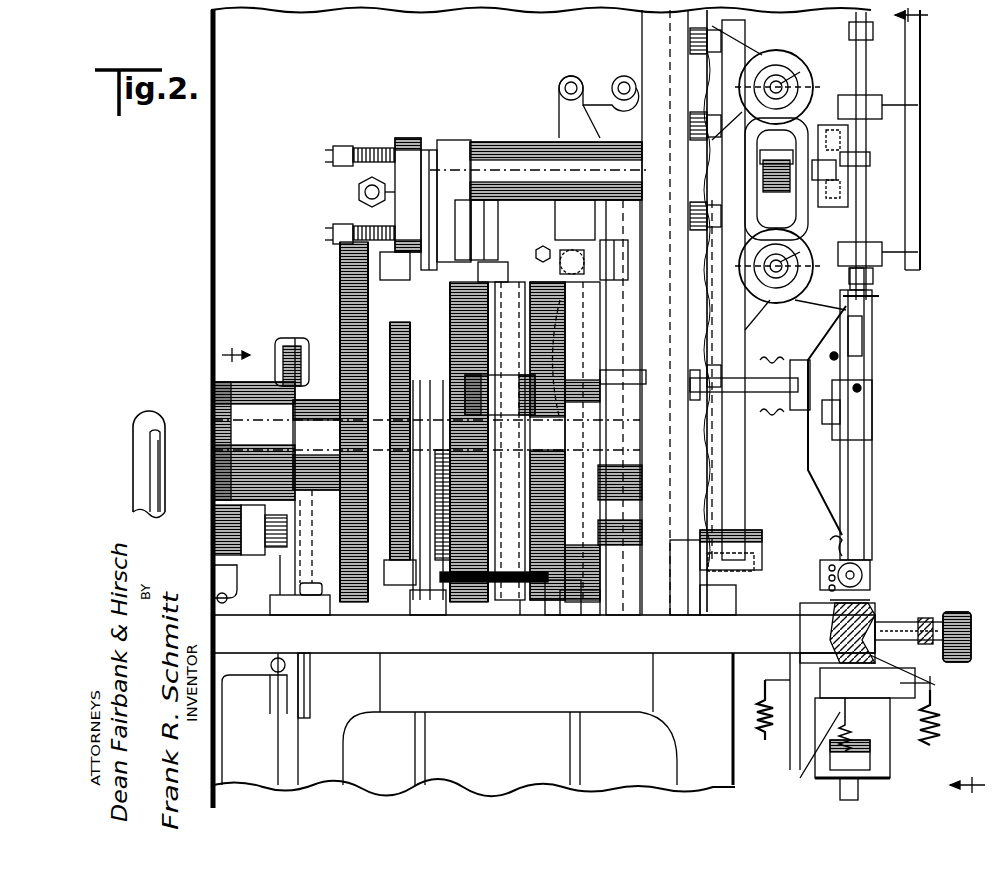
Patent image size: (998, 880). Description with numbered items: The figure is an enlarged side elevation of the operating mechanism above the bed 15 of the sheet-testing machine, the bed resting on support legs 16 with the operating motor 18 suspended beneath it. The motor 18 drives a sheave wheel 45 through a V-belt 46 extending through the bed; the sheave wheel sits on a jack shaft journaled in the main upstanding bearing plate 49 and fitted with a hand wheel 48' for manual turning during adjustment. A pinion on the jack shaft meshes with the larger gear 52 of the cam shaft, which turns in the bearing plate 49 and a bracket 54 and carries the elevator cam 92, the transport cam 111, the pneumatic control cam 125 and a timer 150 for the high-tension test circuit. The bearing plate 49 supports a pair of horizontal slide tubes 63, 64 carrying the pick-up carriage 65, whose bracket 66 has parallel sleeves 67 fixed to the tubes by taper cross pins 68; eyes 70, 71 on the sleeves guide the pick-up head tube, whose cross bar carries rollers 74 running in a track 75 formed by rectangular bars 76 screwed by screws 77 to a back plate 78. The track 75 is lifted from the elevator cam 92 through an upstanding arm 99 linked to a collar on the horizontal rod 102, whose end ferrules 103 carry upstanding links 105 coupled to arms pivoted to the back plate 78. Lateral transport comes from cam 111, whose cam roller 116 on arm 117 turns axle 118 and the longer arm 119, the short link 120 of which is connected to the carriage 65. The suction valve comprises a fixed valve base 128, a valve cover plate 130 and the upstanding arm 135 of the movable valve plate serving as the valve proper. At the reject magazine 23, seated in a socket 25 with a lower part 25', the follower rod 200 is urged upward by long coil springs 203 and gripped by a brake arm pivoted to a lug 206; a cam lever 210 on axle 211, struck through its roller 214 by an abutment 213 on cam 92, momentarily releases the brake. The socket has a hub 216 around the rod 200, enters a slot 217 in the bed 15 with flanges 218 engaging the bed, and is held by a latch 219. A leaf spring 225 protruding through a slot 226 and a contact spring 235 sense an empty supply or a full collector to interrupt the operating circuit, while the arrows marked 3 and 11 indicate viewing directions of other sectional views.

The section line 3- 3 is at (946, 401).
The main drive shaft 11 is at (250, 442).
The bed plate 15 is at (812, 630).
The support legs 16 is at (213, 748).
The operating motor 18 is at (505, 718).
The collector magazine for rejected sheets 23 is at (864, 574).
The socket 25 is at (823, 549).
The lower part of magazine socket 25' is at (809, 753).
The sheave wheel 45 is at (310, 690).
The V-belt 46 is at (290, 748).
The hand wheel 48' is at (132, 459).
The main upstanding bearing plate 49 is at (642, 46).
The larger gear 52 is at (340, 280).
The bracket 54 is at (318, 400).
The slide tube 63 is at (790, 70).
The slide tube 64 is at (770, 302).
The pick-up carriage 65 is at (742, 125).
The bracket 66 is at (750, 212).
The sleeves 67 is at (776, 60).
The taper cross pins 68 is at (800, 72).
The eye 70 is at (920, 106).
The eye 71 is at (920, 252).
The rollers 74 is at (850, 152).
The track 75 is at (868, 208).
The rectangular bars 76 is at (842, 134).
The screws 77 is at (842, 187).
The back plate 78 is at (824, 126).
The elevator cam 92 is at (476, 316).
The upstanding arm 99 is at (624, 330).
The horizontal rod 102 is at (574, 250).
The ferrules 103 is at (592, 296).
The upstanding link 105 is at (534, 226).
The transport cam 111 is at (590, 504).
The cam roller 116 is at (577, 442).
The arm 117 is at (590, 442).
The axle 118 is at (758, 530).
The longer arm 119 is at (728, 456).
The short link 120 is at (622, 298).
The pneumatic control cam 125 is at (400, 322).
The fixed valve base 128 is at (466, 140).
The valve cover plate 130 is at (402, 140).
The upstanding arm 135 is at (422, 270).
The timer 150 is at (213, 395).
The rod 200 is at (862, 795).
The coil springs 203 is at (940, 712).
The lug 206 is at (892, 750).
The cam lever 210 is at (785, 740).
The axle 211 is at (606, 575).
The abutment 213 is at (478, 268).
The roller 214 is at (480, 378).
The hub 216 is at (936, 686).
The slot 217 is at (915, 622).
The flanges 218 is at (894, 574).
The latch 219 is at (935, 622).
The leaf spring 225 is at (850, 334).
The slot 226 is at (854, 312).
The contact spring 235 is at (826, 500).